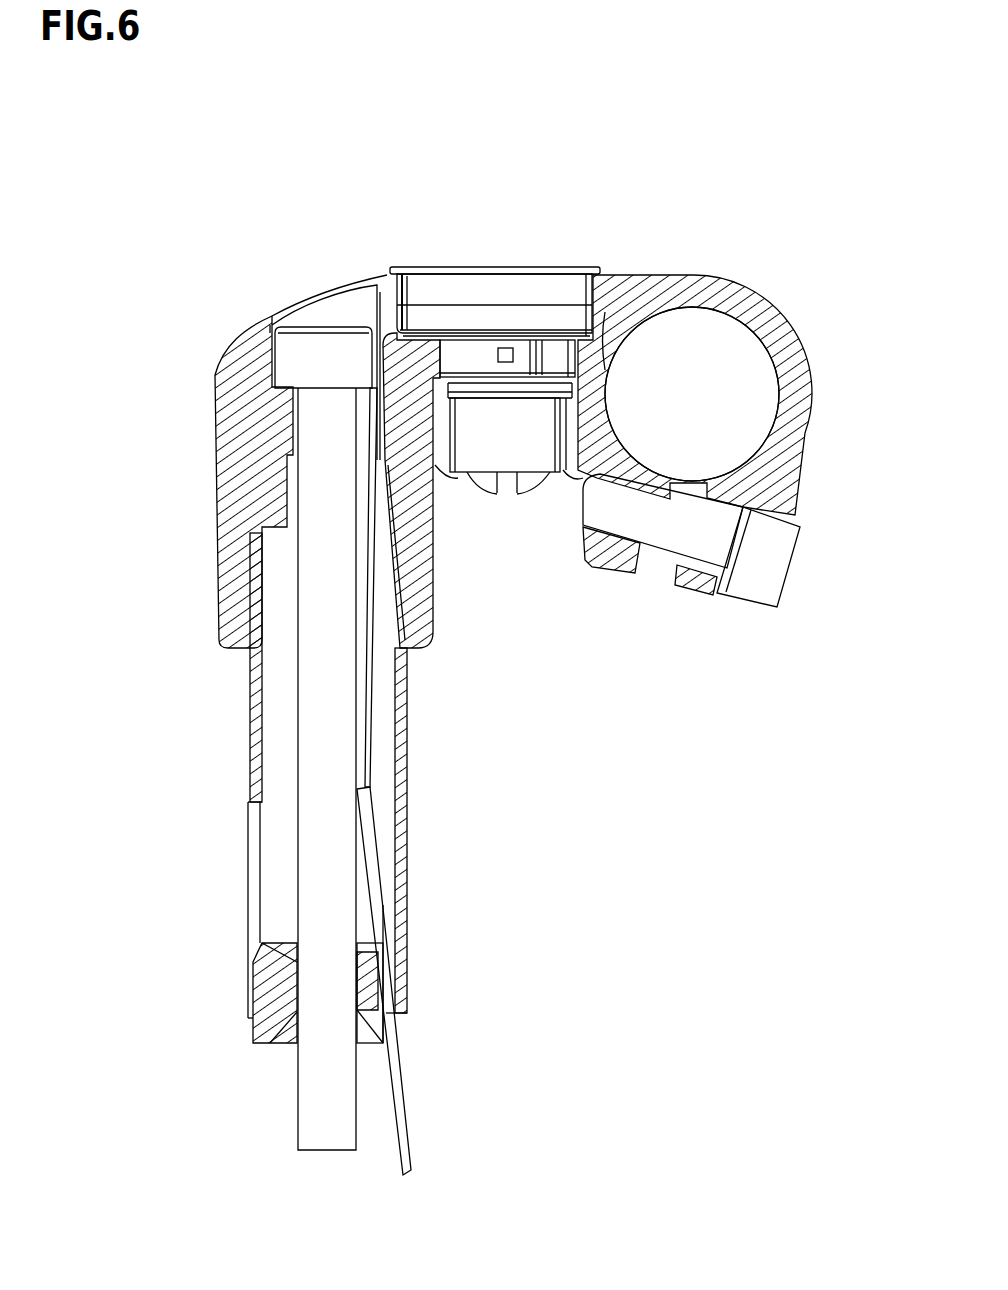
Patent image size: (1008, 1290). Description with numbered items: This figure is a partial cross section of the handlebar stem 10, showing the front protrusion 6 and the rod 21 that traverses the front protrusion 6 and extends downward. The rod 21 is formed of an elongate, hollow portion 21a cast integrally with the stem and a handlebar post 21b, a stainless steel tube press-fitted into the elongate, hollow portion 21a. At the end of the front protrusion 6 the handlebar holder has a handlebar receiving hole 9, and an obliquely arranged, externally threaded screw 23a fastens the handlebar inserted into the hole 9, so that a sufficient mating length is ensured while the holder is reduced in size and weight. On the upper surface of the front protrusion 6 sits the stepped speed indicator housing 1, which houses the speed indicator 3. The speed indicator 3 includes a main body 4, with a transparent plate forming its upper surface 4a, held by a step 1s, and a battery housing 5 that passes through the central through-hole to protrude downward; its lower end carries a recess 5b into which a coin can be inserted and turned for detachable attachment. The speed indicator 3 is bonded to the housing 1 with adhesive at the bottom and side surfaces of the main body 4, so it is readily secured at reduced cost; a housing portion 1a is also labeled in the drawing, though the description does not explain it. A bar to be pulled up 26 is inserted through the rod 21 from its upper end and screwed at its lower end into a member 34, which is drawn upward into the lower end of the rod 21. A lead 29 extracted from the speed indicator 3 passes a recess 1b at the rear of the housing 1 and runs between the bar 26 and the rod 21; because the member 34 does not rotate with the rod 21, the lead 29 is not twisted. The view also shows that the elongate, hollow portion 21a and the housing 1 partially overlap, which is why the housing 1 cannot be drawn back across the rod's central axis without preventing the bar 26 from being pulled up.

The handlebar stem 10 is at (57, 217).
The front protrusion 6 is at (520, 340).
The main body 4 is at (494, 258).
The upper surface 4a is at (495, 232).
The speed indicator housing 1 is at (487, 293).
The recess 1b is at (327, 286).
The valve seat 1a is at (509, 514).
The step 1s is at (630, 360).
The speed indicator 3 is at (513, 423).
The handlebar receiving hole 9 is at (701, 355).
The battery housing 5 is at (510, 474).
The recess 5b is at (511, 519).
The screw 23a is at (729, 561).
The rod 21 is at (423, 754).
The elongate, hollow portion 21a is at (386, 633).
The handlebar post 21b is at (385, 845).
The member 34 is at (272, 993).
The bar to be pulled up 26 is at (279, 738).
The lead 29 is at (430, 781).